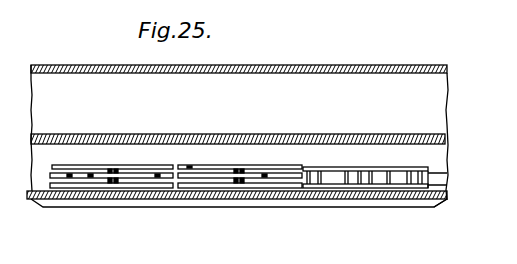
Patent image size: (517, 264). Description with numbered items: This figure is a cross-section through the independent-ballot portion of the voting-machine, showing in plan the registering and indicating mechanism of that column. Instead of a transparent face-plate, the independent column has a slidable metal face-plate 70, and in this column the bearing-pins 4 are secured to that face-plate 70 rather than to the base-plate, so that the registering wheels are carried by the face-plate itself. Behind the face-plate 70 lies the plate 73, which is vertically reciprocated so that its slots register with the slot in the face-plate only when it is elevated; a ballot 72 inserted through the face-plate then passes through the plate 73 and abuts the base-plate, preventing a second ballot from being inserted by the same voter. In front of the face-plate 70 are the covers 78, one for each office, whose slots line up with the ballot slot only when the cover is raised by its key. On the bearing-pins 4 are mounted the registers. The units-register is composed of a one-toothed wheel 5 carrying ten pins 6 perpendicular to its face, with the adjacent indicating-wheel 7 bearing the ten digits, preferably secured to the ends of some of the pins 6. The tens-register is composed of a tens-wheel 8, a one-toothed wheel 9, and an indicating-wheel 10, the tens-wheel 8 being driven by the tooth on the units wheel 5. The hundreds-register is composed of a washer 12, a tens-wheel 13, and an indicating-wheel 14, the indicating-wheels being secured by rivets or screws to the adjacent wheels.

The bearing-pins 4 is at (112, 175).
The one-toothed wheel 5 is at (320, 168).
The pins 6 is at (391, 183).
The indicating-wheel 7 is at (413, 183).
The tens-wheel 8 is at (186, 167).
The one-toothed wheel 9 is at (218, 178).
The indicating-wheel 10 is at (250, 193).
The washer 12 is at (60, 165).
The tens-wheel 13 is at (86, 183).
The indicating-wheel 14 is at (129, 192).
The metal face-plate 70 is at (448, 195).
The ballot 72 is at (253, 65).
The plate 73 is at (49, 135).
The covers 78 is at (194, 205).